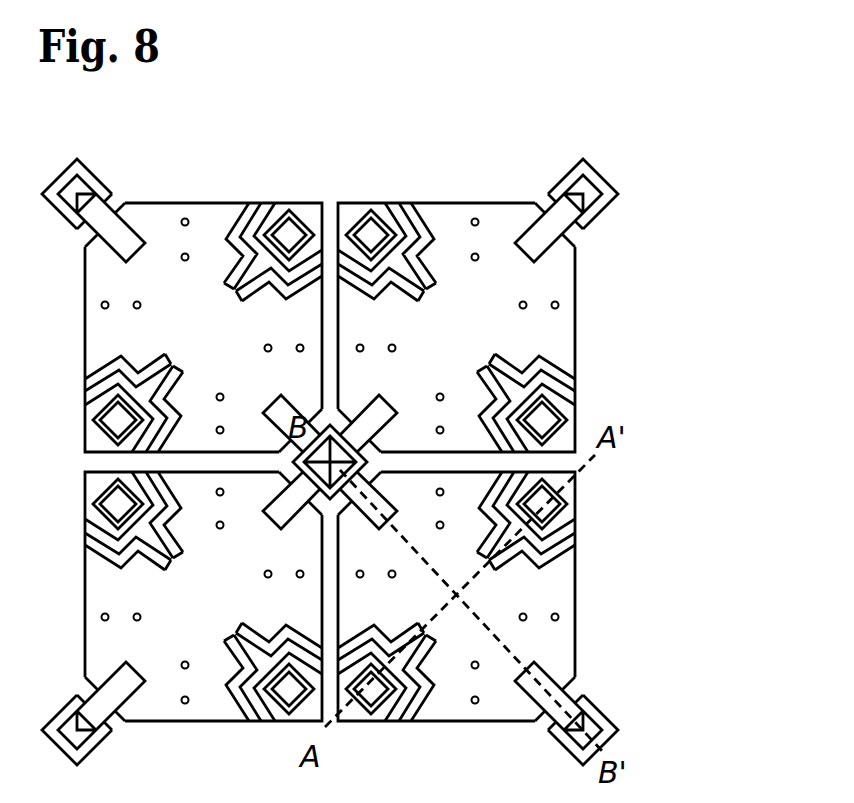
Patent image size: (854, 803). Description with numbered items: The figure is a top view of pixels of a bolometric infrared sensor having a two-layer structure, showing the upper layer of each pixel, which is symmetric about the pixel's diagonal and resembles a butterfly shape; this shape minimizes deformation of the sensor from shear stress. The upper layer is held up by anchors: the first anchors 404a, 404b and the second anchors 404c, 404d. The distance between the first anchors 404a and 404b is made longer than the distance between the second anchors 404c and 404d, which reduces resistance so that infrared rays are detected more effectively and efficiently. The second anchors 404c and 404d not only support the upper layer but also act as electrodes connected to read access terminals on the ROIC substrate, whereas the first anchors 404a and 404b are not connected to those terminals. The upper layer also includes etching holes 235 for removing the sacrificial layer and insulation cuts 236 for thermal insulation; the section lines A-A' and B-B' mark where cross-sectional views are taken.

The first anchor 404a is at (601, 173).
The first anchor 404b is at (331, 421).
The second anchor 404c is at (561, 418).
The second anchor 404d is at (389, 204).
The insulation cut 236 is at (566, 542).
The etching hole 235 is at (560, 612).